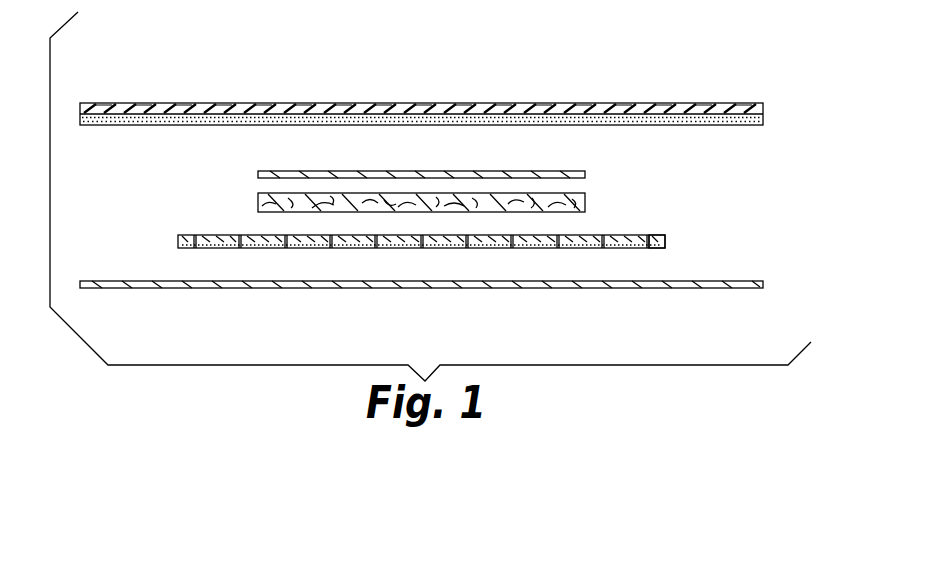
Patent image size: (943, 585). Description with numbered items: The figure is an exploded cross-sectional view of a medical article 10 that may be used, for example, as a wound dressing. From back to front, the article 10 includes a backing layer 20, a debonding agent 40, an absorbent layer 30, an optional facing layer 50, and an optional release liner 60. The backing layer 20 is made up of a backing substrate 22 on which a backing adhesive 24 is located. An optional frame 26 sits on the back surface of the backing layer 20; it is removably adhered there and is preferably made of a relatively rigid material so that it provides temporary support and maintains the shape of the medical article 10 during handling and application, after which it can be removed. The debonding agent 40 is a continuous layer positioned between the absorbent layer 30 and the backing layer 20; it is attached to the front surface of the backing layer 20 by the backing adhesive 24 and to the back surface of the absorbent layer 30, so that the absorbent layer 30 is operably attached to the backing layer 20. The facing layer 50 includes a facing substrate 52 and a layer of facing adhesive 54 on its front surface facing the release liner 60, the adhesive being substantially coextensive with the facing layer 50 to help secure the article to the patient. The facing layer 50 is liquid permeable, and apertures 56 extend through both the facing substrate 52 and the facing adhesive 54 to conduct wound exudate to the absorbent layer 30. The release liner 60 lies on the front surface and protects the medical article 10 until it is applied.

The medical article 10 is at (402, 70).
The backing layer 20 is at (147, 98).
The backing substrate 22 is at (765, 116).
The backing adhesive 24 is at (704, 126).
The frame 26 is at (203, 103).
The absorbent layer 30 is at (268, 201).
The debonding agent 40 is at (270, 172).
The facing layer 50 is at (173, 230).
The facing substrate 52 is at (667, 237).
The facing adhesive 54 is at (668, 245).
The apertures 56 is at (648, 235).
The release liner 60 is at (258, 291).